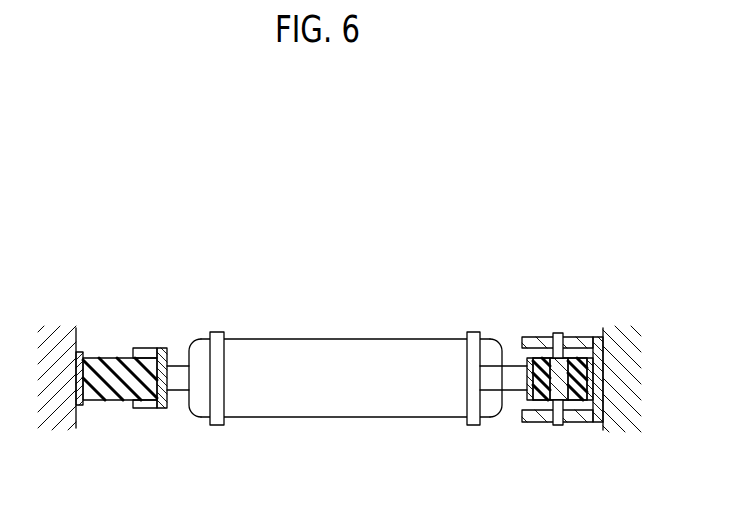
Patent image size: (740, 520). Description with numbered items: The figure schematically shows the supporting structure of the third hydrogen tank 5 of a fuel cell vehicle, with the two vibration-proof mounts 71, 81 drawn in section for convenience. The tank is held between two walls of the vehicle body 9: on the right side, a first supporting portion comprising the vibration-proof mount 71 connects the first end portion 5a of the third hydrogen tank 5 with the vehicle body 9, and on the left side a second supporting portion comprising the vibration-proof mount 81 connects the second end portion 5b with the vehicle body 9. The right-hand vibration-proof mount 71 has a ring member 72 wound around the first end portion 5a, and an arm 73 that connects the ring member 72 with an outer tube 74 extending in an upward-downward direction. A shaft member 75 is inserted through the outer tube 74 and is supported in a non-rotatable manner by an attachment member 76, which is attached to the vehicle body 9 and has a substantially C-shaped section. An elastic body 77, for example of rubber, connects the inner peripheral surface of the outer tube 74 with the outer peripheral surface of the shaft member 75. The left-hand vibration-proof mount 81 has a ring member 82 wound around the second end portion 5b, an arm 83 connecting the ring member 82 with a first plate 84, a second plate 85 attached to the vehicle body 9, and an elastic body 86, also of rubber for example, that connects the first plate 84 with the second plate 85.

The third hydrogen tank 5 is at (346, 380).
The first end portion 5a is at (491, 414).
The second end portion 5b is at (196, 415).
The vehicle body 9 is at (57, 330).
The vibration-proof mount 71 is at (551, 361).
The ring member 72 is at (473, 333).
The arm 73 is at (510, 378).
The outer tube 74 is at (530, 360).
The shaft member 75 is at (556, 390).
The attachment member 76 is at (600, 404).
The elastic body 77 is at (578, 362).
The vibration-proof mount 81 is at (127, 371).
The ring member 82 is at (217, 340).
The arm 83 is at (181, 380).
The first plate 84 is at (161, 409).
The second plate 85 is at (80, 406).
The elastic body 86 is at (117, 392).